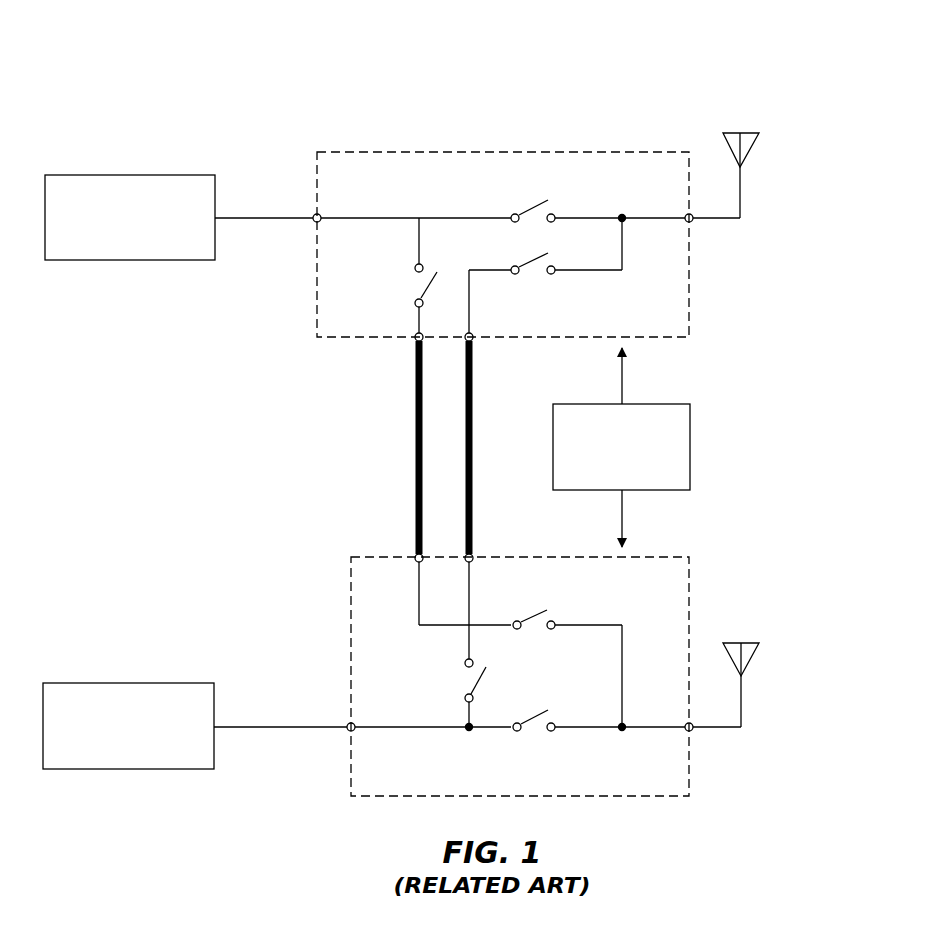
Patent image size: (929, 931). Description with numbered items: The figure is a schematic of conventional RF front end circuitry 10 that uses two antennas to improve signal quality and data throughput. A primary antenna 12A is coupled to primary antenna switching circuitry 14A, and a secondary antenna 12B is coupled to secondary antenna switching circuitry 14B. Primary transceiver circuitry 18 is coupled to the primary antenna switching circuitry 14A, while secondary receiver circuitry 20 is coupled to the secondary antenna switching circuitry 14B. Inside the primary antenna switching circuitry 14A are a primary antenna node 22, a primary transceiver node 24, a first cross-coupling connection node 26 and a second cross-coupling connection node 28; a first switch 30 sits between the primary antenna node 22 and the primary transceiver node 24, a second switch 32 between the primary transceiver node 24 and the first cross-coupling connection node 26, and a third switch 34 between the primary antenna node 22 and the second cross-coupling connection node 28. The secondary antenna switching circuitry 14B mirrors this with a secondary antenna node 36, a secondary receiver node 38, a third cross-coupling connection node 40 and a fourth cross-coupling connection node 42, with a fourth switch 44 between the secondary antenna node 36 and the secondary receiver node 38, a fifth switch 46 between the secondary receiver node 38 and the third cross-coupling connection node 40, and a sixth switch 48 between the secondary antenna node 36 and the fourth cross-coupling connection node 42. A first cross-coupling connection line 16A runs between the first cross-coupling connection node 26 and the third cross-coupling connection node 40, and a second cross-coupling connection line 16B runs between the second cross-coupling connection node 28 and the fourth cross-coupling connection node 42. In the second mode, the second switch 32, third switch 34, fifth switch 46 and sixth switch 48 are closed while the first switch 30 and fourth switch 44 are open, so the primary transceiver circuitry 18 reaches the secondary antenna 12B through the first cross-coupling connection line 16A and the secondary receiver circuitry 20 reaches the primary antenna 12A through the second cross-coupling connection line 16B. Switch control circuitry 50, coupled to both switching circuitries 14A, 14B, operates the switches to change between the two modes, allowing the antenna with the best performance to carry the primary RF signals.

The conventional RF front end circuitry 10 is at (810, 56).
The primary antenna 12A is at (752, 133).
The secondary antenna 12B is at (752, 643).
The primary antenna switching circuitry 14A is at (640, 329).
The secondary antenna switching circuitry 14B is at (638, 782).
The first cross-coupling connection line 16A is at (414, 445).
The second cross-coupling connection line 16B is at (474, 445).
The primary transceiver circuitry 18 is at (119, 247).
The secondary receiver circuitry 20 is at (117, 756).
The primary antenna node 22 is at (692, 222).
The primary transceiver node 24 is at (313, 222).
The first cross-coupling connection node 26 is at (414, 339).
The second cross-coupling connection node 28 is at (474, 339).
The first switch 30 is at (519, 188).
The second switch 32 is at (400, 284).
The third switch 34 is at (540, 285).
The secondary antenna node 36 is at (692, 732).
The secondary receiver node 38 is at (349, 731).
The third cross-coupling connection node 40 is at (414, 556).
The fourth cross-coupling connection node 42 is at (474, 556).
The fourth switch 44 is at (538, 742).
The fifth switch 46 is at (452, 684).
The sixth switch 48 is at (548, 596).
The switch control circuitry 50 is at (610, 477).